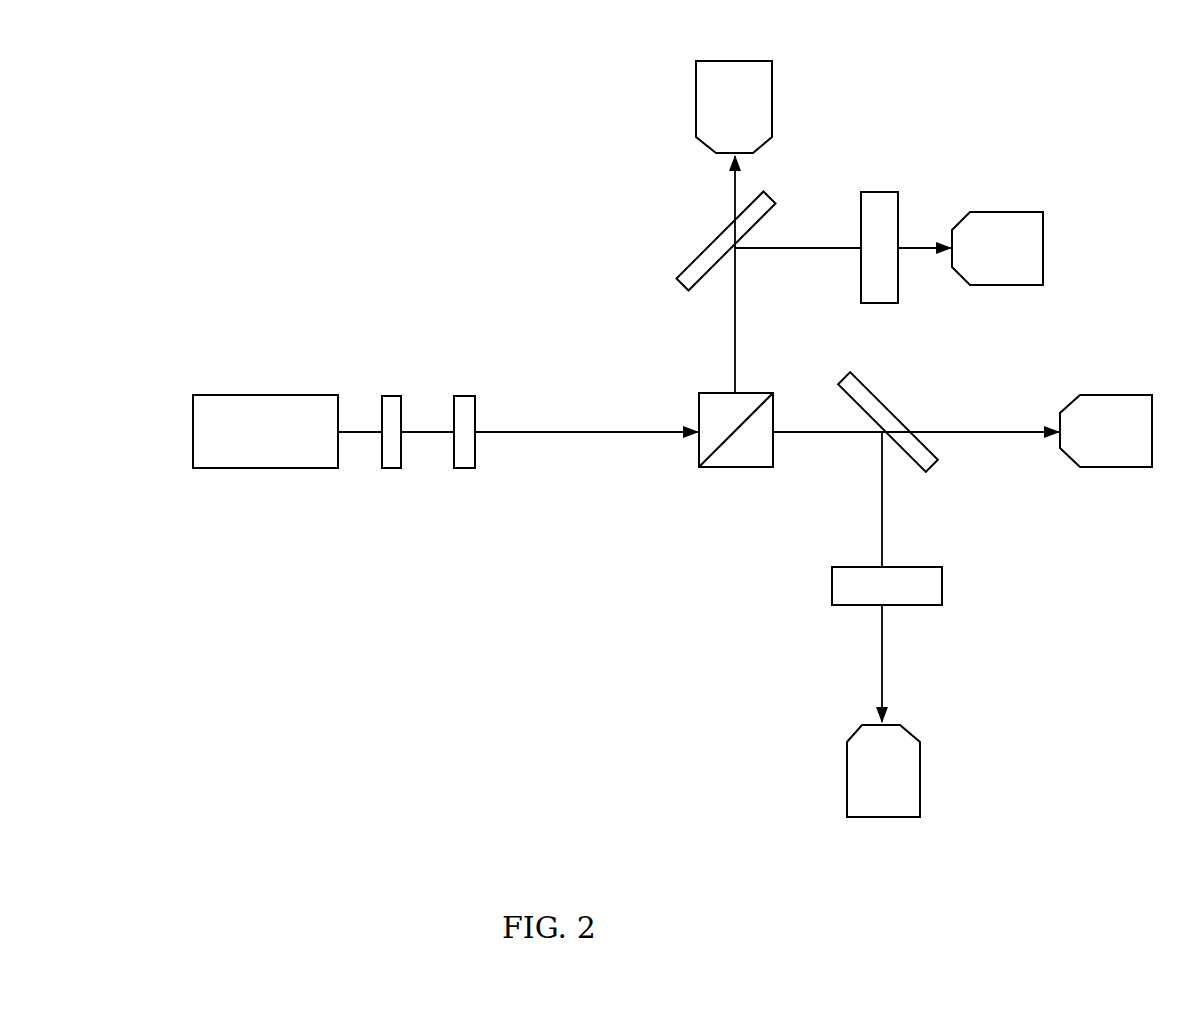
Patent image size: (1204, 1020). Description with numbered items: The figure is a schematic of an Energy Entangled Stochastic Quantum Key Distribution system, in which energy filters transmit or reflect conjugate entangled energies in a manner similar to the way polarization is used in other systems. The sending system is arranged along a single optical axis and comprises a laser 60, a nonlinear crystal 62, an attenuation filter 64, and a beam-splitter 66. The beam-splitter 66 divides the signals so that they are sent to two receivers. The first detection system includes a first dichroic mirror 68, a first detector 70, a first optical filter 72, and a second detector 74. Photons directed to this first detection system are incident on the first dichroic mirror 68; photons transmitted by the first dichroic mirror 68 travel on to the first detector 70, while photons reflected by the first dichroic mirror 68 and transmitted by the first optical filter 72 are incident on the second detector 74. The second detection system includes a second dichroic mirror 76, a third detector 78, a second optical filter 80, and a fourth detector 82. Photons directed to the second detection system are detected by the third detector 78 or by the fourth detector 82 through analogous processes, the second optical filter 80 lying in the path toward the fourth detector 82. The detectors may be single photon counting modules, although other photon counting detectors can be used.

The laser 60 is at (278, 450).
The nonlinear crystal 62 is at (390, 447).
The attenuation filter 64 is at (467, 412).
The beam-splitter 66 is at (733, 468).
The first dichroic mirror 68 is at (702, 253).
The first detector 70 is at (757, 88).
The first optical filter 72 is at (883, 210).
The second detector 74 is at (1015, 230).
The second dichroic mirror 76 is at (900, 390).
The third detector 78 is at (1097, 445).
The second optical filter 80 is at (918, 585).
The fourth detector 82 is at (902, 782).